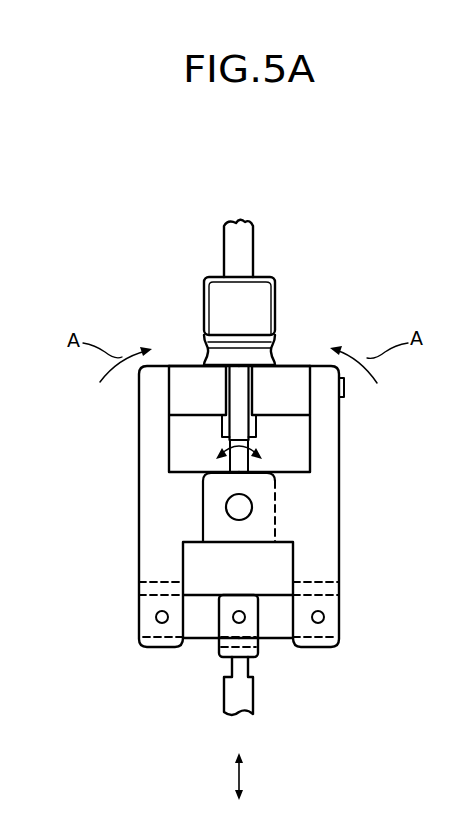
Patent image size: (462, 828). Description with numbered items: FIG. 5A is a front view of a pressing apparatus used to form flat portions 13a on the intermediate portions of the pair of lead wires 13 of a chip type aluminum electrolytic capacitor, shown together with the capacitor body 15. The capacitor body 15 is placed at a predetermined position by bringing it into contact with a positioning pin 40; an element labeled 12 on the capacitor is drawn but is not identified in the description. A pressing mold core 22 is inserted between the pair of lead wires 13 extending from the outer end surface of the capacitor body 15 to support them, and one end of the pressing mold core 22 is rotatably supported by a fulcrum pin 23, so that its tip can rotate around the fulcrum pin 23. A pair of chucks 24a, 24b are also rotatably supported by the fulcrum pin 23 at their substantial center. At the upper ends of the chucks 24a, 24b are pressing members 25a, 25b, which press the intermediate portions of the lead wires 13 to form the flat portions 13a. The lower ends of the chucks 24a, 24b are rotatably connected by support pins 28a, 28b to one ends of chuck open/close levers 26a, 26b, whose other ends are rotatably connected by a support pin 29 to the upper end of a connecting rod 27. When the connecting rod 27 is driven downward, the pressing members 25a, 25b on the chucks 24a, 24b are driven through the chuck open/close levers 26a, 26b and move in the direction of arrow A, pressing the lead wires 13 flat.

The positioning pin 40 is at (247, 243).
The plug body 12 is at (254, 285).
The capacitor body 15 is at (207, 274).
The flat portions 13a is at (208, 380).
The pressing member 25a is at (292, 380).
The pressing member 25b is at (177, 382).
The lead wires 13 is at (222, 426).
The pressing mold core 22 is at (225, 446).
The chuck 24a is at (330, 522).
The chuck 24b is at (155, 512).
The fulcrum pin 23 is at (238, 507).
The chuck open/close lever 26a is at (282, 607).
The chuck open/close lever 26b is at (203, 630).
The support pin 28a is at (318, 617).
The support pin 28b is at (162, 617).
The support pin 29 is at (240, 618).
The connecting rod 27 is at (253, 698).